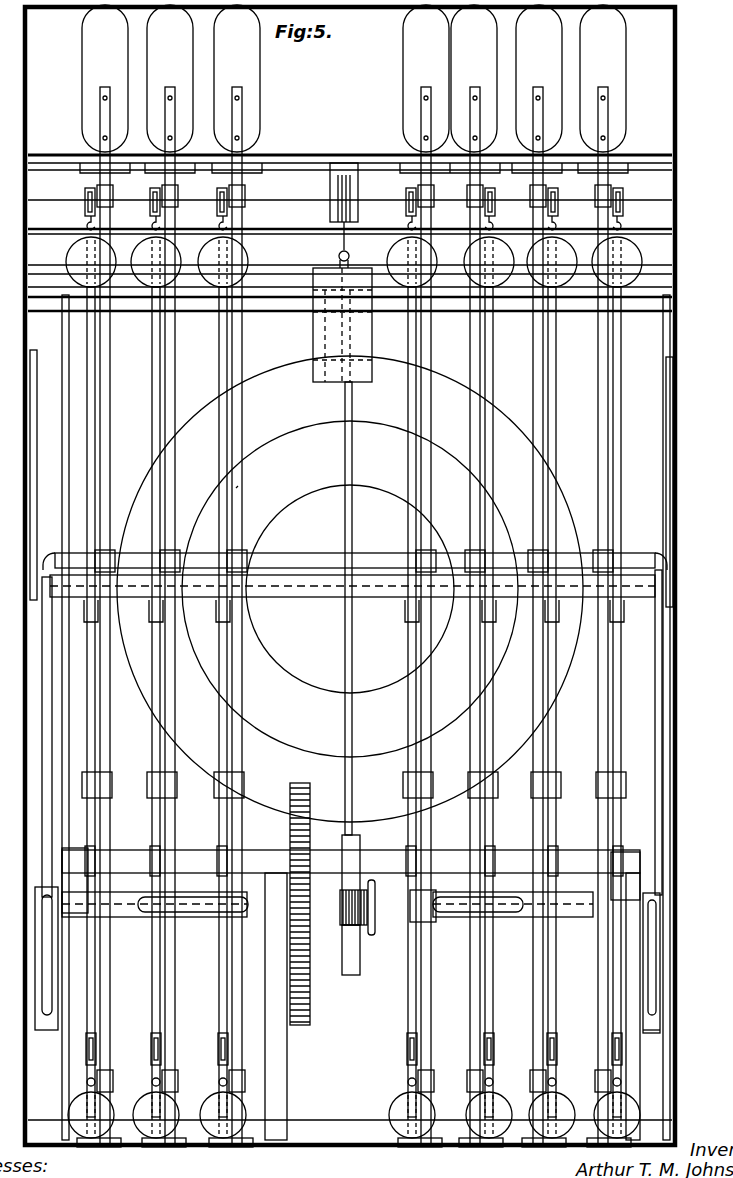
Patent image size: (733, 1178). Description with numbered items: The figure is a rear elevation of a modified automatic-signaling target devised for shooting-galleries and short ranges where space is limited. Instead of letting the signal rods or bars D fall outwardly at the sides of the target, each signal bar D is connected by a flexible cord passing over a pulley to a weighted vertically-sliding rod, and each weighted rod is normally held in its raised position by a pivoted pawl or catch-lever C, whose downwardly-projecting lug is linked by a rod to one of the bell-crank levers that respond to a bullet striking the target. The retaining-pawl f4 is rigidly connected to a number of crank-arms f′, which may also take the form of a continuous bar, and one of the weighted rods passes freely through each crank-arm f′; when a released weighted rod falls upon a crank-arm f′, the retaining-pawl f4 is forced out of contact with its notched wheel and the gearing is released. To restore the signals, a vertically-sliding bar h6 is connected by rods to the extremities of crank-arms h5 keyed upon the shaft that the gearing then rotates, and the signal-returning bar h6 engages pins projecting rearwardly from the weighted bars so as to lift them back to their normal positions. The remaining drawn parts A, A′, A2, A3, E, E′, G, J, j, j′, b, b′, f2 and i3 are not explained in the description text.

The inner dial circle A is at (350, 589).
The middle dial circle A′ is at (254, 502).
The outer dial circle A2 is at (210, 492).
The outer dial ring A3 is at (158, 442).
The pivoted pawl or catch-lever C is at (238, 488).
The signal rods or bars D is at (105, 376).
The frame casing E is at (30, 508).
The side bracket E′ is at (668, 1054).
The guide posts G is at (632, 886).
The weight J is at (342, 302).
The weight rod j is at (345, 404).
The pulley block j′ is at (352, 190).
The upper cross bar b is at (350, 225).
The lower cross bar b′ is at (256, 1116).
The crank-arms f′ is at (624, 855).
The lower lever bar f2 is at (342, 944).
The retaining-pawl f4 is at (364, 855).
The crank-arms h5 is at (54, 949).
The vertically-sliding bar h6 is at (296, 590).
The pinion i3 is at (341, 906).